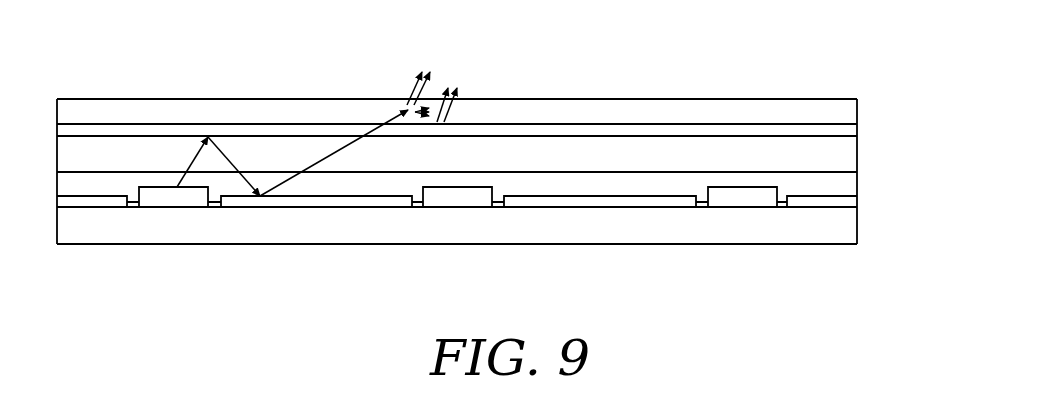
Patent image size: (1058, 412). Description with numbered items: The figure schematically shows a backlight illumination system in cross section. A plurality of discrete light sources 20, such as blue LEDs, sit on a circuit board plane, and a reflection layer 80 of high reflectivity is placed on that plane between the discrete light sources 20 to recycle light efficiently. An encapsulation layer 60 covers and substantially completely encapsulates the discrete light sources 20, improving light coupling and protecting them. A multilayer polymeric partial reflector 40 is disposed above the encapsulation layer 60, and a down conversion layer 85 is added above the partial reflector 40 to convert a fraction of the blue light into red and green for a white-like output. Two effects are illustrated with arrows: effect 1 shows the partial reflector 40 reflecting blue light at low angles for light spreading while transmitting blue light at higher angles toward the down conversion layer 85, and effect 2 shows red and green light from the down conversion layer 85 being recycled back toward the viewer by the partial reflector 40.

The blue light reflection and transmission effect 1 is at (289, 153).
The red and green recycling effect 2 is at (440, 99).
The discrete light source 20 is at (743, 208).
The multilayer polymeric partial reflector 40 is at (857, 127).
The encapsulation layer 60 is at (857, 182).
The reflection layer 80 is at (647, 208).
The down conversion layer 85 is at (857, 110).